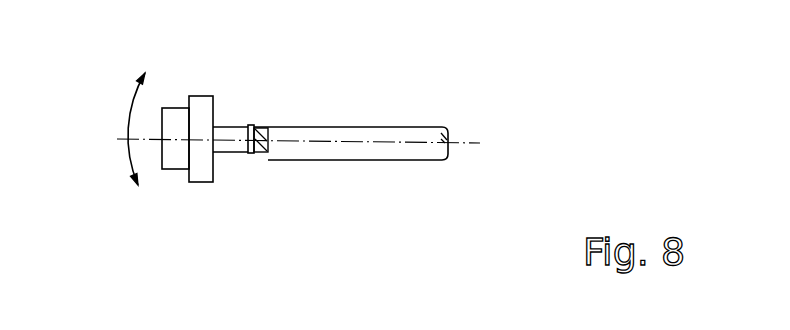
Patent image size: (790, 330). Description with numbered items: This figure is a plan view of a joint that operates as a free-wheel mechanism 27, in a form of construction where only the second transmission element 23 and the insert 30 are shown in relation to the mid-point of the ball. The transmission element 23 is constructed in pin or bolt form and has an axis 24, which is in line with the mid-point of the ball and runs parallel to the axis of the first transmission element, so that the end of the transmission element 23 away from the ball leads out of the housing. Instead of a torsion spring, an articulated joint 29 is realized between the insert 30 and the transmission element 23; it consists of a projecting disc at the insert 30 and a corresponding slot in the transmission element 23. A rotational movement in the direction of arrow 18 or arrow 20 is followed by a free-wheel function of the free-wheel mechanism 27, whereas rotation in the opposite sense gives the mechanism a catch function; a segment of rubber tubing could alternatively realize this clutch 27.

The arrow 18 is at (132, 163).
The arrow 20 is at (134, 97).
The second transmission element 23 is at (367, 150).
The axis 24 is at (413, 142).
The free-wheel mechanism 27 is at (251, 161).
The articulated joint 29 is at (257, 128).
The insert 30 is at (176, 122).